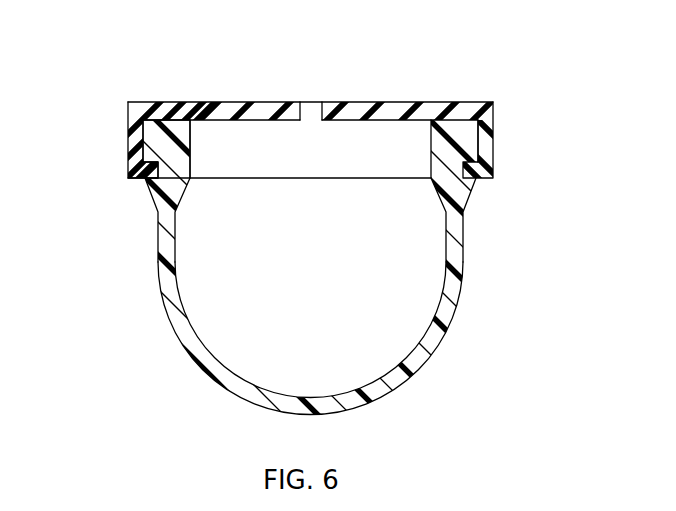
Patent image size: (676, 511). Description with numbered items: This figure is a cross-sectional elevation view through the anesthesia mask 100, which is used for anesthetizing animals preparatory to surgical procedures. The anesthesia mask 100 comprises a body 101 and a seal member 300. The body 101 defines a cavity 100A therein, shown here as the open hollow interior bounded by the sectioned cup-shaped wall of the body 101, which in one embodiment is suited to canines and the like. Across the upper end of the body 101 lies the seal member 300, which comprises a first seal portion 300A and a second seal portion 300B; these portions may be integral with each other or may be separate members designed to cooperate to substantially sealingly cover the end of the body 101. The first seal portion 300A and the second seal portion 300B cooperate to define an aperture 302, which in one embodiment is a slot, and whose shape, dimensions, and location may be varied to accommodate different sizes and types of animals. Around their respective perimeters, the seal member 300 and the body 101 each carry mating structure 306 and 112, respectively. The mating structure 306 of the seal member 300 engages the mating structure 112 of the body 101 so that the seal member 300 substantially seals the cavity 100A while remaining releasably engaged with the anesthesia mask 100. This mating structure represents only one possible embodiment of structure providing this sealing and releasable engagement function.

The anesthesia mask 100 is at (160, 366).
The cavity 100A is at (376, 268).
The body 101 is at (425, 373).
The mating structure 112 is at (178, 150).
The seal member 300 is at (496, 124).
The first seal portion 300A is at (409, 101).
The second seal portion 300B is at (228, 101).
The aperture 302 is at (311, 102).
The mating structure 306 is at (146, 180).